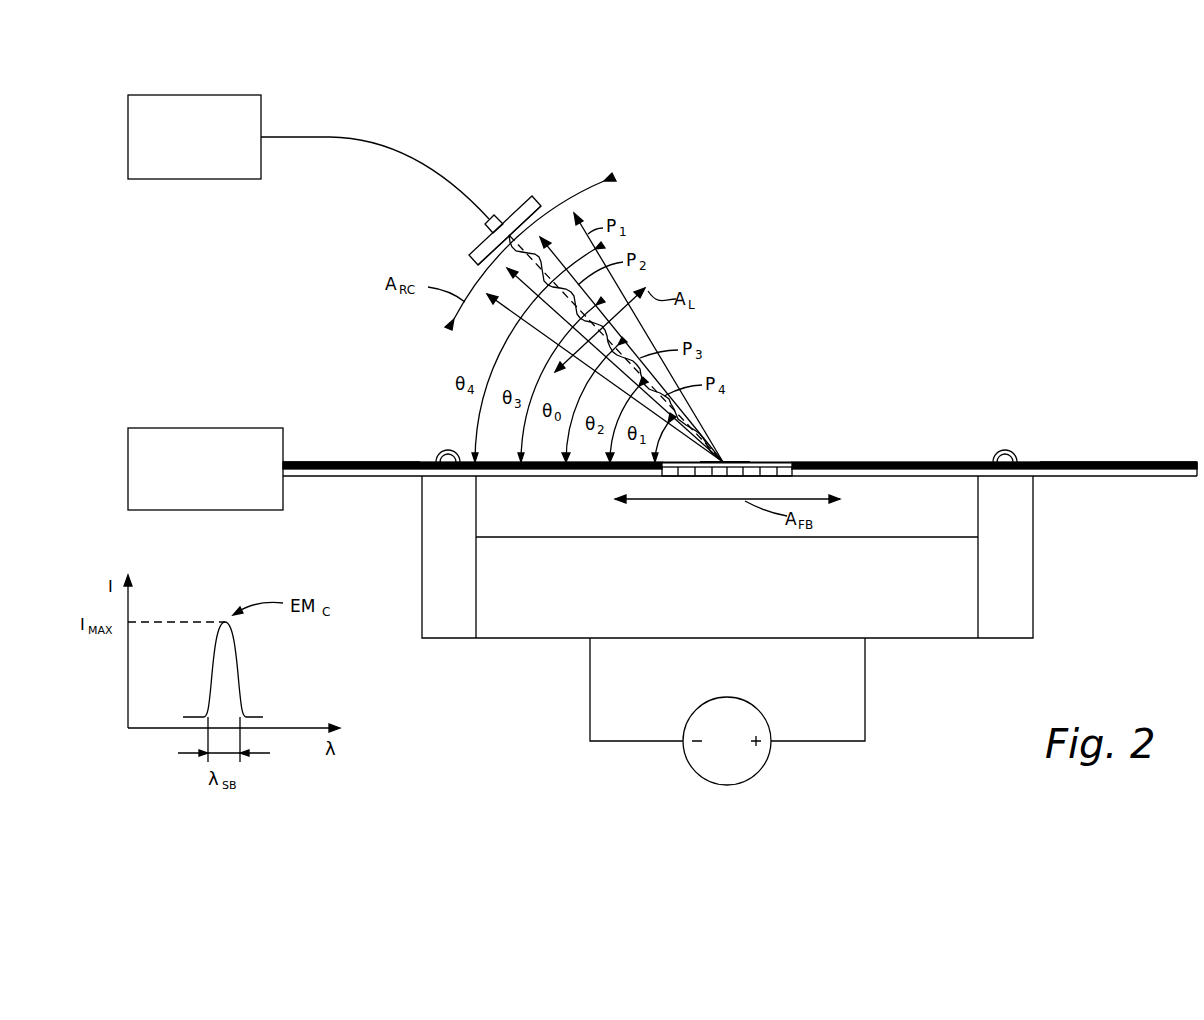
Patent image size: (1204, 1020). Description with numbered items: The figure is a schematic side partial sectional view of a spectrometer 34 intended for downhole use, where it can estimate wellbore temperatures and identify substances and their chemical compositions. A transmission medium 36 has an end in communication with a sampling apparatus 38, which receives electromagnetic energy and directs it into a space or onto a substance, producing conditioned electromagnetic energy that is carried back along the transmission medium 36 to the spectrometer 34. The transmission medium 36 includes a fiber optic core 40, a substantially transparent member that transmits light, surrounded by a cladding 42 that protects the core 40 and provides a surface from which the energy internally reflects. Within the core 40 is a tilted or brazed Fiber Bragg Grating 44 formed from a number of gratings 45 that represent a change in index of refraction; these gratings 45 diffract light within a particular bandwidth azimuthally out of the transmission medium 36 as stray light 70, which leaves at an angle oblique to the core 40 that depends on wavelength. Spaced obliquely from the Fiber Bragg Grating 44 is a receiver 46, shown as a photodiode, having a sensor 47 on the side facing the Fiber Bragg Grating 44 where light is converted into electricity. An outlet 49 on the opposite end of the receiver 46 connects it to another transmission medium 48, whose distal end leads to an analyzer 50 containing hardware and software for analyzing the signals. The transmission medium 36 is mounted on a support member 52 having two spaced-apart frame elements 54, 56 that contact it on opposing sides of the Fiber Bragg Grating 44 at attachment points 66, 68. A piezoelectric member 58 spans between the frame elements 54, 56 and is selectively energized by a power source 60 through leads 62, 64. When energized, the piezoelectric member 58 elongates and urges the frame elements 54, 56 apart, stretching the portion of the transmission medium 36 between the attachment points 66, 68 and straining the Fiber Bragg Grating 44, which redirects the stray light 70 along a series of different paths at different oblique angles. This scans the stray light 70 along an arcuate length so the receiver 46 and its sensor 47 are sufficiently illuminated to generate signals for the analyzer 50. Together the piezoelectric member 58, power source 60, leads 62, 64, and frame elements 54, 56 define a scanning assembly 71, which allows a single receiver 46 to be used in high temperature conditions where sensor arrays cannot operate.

The spectrometer 34 is at (1006, 139).
The transmission medium 36 is at (340, 447).
The sampling apparatus 38 is at (128, 468).
The fiber optic core 40 is at (391, 462).
The cladding 42 is at (356, 478).
The Fiber Bragg Grating 44 is at (760, 446).
The gratings 45 is at (787, 463).
The receiver 46 is at (518, 203).
The sensor 47 is at (542, 212).
The transmission medium 48 is at (321, 137).
The outlet 49 is at (485, 224).
The analyzer 50 is at (128, 137).
The support member 52 is at (400, 567).
The frame element 54 is at (422, 600).
The frame element 56 is at (1033, 600).
The piezoelectric member 58 is at (738, 640).
The power source 60 is at (780, 770).
The lead 62 is at (865, 697).
The lead 64 is at (590, 700).
The attachment point 66 is at (447, 455).
The attachment point 68 is at (1005, 455).
The stray light 70 is at (664, 330).
The scanning assembly 71 is at (983, 386).